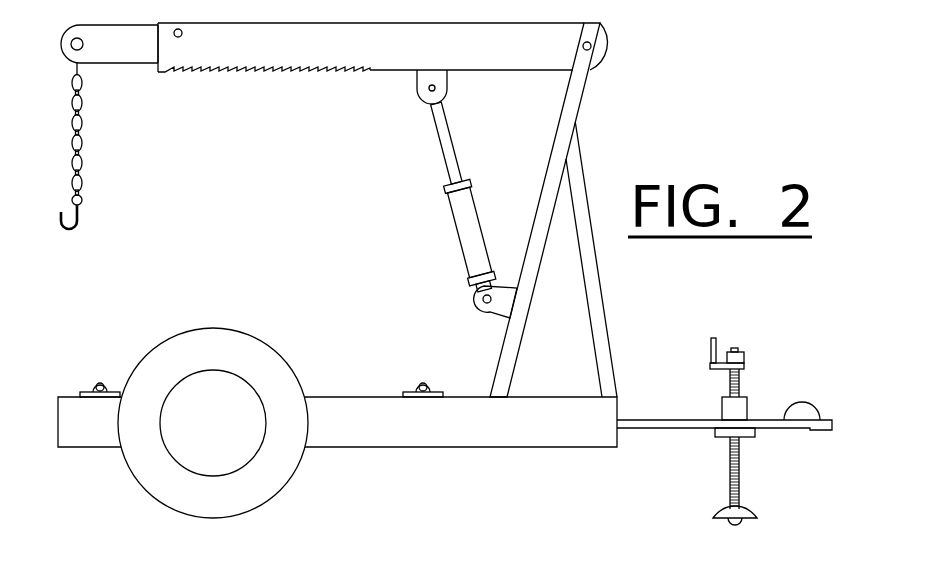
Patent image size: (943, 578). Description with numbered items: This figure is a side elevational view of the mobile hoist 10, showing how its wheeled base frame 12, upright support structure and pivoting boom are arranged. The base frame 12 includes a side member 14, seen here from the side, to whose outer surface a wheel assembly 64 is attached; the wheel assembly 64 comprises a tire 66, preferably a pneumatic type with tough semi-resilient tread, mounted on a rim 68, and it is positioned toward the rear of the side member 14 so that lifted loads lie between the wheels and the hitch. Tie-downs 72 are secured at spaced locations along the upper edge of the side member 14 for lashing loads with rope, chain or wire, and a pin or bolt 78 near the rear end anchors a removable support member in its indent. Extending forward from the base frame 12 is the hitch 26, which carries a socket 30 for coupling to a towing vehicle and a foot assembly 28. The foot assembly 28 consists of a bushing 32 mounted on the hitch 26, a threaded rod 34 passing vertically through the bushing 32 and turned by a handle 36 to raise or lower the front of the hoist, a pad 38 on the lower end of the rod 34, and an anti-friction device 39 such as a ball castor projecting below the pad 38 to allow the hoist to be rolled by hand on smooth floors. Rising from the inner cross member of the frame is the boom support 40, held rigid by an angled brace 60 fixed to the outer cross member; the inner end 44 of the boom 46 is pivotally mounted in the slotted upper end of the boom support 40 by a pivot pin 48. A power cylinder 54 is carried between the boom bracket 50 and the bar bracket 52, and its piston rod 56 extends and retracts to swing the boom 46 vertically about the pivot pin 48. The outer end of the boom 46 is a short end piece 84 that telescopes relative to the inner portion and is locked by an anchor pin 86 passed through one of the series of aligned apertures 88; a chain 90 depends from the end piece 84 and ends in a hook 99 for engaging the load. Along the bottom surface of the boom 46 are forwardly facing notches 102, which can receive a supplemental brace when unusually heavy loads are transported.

The mobile hoist 10 is at (595, 153).
The base frame 12 is at (454, 457).
The side member 14 is at (540, 438).
The hitch 26 is at (641, 418).
The foot assembly 28 is at (704, 455).
The socket 30 is at (818, 415).
The bushing 32 is at (748, 411).
The threaded rod 34 is at (740, 484).
The handle 36 is at (716, 346).
The pad 38 is at (752, 513).
The anti-friction device 39 is at (738, 525).
The boom support 40 is at (511, 363).
The inner end of boom 44 is at (596, 67).
The boom 46 is at (383, 56).
The pivot pin 48 is at (591, 46).
The boom bracket 50 is at (438, 87).
The bar bracket 52 is at (488, 312).
The power cylinder 54 is at (468, 241).
The piston rod 56 is at (450, 141).
The brace 60 is at (605, 320).
The wheel assembly 64 is at (241, 413).
The tire 66 is at (248, 337).
The rim 68 is at (238, 385).
The tie-down 72 is at (112, 377).
The pin or bolt 78 is at (68, 413).
The end piece 84 is at (125, 63).
The anchor pin 86 is at (182, 36).
The aligned apertures 88 is at (120, 33).
The chain 90 is at (82, 168).
The hook 99 is at (84, 224).
The notch 102 is at (267, 70).